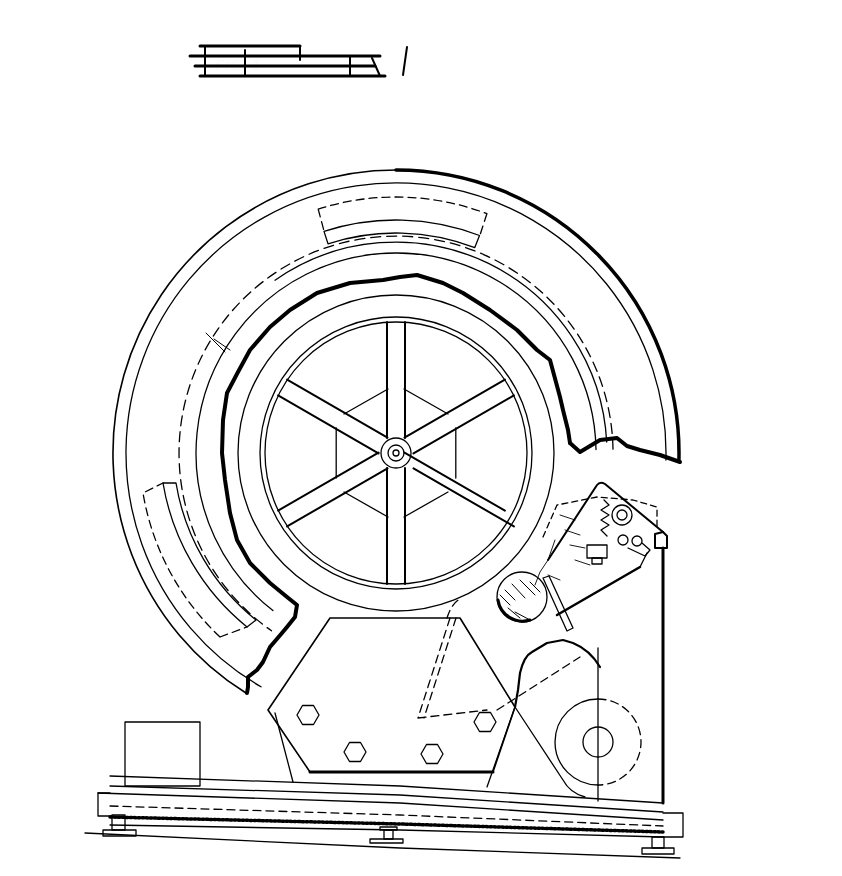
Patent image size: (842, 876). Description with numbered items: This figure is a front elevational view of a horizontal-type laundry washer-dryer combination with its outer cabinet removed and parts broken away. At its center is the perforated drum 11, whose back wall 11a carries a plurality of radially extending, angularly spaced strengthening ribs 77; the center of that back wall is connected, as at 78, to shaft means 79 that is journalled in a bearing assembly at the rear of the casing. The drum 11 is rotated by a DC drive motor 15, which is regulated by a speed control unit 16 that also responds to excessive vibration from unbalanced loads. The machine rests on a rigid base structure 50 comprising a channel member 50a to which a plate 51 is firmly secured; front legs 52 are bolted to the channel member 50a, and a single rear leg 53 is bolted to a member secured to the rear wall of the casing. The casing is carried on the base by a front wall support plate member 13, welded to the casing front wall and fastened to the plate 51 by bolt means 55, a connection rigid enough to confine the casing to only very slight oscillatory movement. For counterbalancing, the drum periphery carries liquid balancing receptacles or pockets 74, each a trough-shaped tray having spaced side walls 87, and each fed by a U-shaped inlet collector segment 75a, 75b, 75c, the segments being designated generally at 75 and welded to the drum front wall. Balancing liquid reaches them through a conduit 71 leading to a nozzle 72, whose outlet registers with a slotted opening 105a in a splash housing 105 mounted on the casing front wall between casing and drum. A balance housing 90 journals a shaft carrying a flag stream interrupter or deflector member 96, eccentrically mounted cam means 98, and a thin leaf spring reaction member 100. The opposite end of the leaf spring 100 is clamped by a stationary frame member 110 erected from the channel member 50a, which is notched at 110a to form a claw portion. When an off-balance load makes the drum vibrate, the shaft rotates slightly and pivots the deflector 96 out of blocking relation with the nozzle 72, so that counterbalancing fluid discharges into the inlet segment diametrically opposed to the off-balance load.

The drum 11 is at (506, 472).
The back wall of the drum 11a is at (477, 350).
The front wall support plate member 13 is at (268, 712).
The DC drive motor 15 is at (567, 770).
The speed control unit 16 is at (143, 722).
The base structure 50 is at (262, 820).
The channel member 50a is at (325, 825).
The plate 51 is at (485, 760).
The front legs 52 is at (112, 838).
The rear leg 53 is at (385, 844).
The bolt means 55 is at (358, 741).
The second conduit 71 is at (556, 622).
The nozzle 72 is at (580, 556).
The liquid balancing receptacle 74 is at (398, 190).
The inlet segments 75 is at (222, 307).
The inlet collector segment 75a is at (222, 330).
The inlet collector segment 75b is at (538, 292).
The inlet collector segment 75c is at (594, 433).
The strengthening ribs 77 is at (380, 355).
The center connection 78 is at (380, 453).
The shaft means 79 is at (455, 452).
The side walls 87 is at (322, 230).
The balance housing 90 is at (608, 485).
The flag stream interrupter 96 is at (602, 586).
The cam means 98 is at (638, 568).
The leaf spring reaction member 100 is at (636, 540).
The splash housing 105 is at (440, 658).
The slotted opening 105a is at (512, 592).
The stationary frame member 110 is at (664, 622).
The notch 110a is at (668, 548).